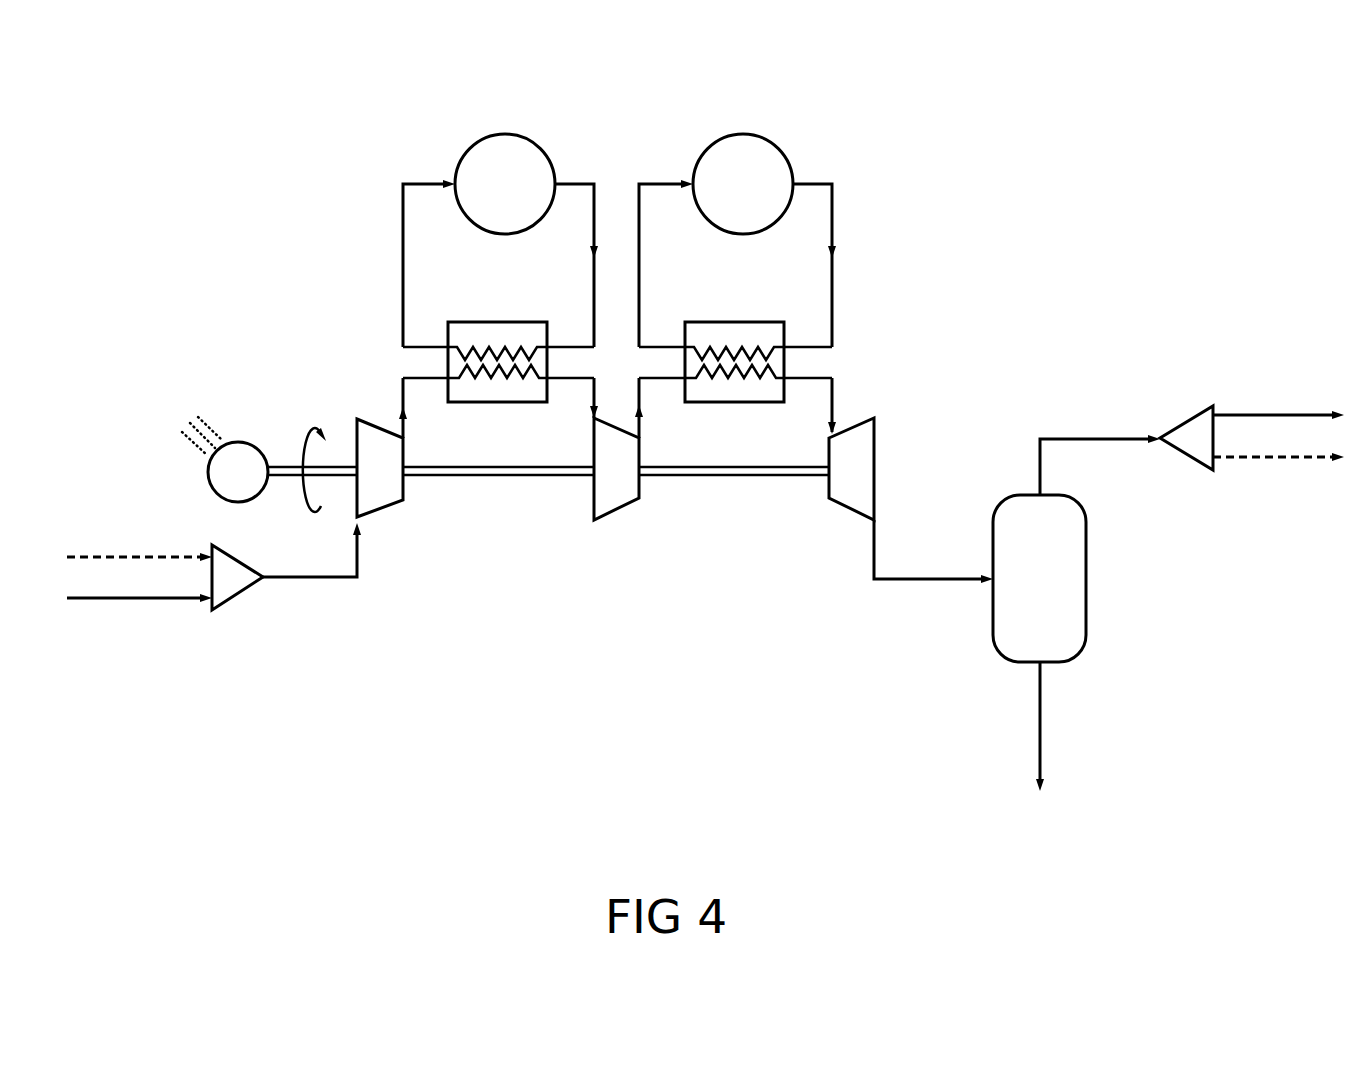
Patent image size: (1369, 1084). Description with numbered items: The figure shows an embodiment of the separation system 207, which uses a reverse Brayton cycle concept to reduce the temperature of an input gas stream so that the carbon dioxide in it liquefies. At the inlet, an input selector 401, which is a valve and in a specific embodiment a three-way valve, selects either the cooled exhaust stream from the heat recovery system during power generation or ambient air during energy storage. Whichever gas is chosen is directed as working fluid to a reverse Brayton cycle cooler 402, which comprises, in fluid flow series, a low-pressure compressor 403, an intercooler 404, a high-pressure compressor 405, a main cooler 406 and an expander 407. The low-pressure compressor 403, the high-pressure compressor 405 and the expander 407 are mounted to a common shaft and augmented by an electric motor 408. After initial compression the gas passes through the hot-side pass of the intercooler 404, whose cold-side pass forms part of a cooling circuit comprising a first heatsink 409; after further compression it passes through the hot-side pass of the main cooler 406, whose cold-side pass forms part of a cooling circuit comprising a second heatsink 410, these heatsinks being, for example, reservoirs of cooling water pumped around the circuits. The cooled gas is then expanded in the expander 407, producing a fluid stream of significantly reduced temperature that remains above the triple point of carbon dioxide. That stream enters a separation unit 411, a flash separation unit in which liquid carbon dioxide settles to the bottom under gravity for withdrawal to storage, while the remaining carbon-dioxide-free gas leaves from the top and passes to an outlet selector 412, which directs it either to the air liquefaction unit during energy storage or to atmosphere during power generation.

The separation system 207 is at (200, 100).
The input selector 401 is at (245, 590).
The reverse Brayton cycle cooler 402 is at (552, 603).
The low-pressure compressor 403 is at (403, 493).
The intercooler 404 is at (520, 322).
The high-pressure compressor 405 is at (642, 497).
The main cooler 406 is at (757, 322).
The expander 407 is at (825, 497).
The electric motor 408 is at (242, 441).
The first heatsink 409 is at (528, 135).
The second heatsink 410 is at (762, 135).
The separation unit 411 is at (1088, 611).
The outlet selector 412 is at (1184, 457).